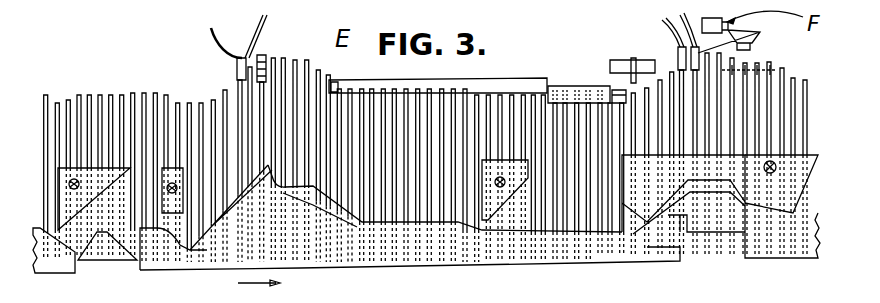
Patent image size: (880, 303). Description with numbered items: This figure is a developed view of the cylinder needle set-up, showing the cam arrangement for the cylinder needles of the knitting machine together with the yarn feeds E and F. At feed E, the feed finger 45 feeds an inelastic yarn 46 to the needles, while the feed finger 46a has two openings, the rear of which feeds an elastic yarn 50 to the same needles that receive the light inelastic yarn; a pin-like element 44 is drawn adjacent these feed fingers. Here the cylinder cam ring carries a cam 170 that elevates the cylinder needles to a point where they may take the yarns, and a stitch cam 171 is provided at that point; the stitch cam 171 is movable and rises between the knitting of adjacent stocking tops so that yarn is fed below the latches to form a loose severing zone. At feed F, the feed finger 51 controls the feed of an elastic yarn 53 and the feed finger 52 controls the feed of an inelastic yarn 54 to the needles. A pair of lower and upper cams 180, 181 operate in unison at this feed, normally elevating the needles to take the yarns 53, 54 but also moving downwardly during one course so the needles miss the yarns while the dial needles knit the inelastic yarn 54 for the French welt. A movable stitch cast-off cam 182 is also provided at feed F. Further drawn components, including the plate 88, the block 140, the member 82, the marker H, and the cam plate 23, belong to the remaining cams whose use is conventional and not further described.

The needle pin 44 is at (211, 32).
The elastic yarn 50 is at (255, 32).
The inelastic yarn 46 is at (337, 27).
The feed finger 46a is at (240, 60).
The feed finger 45 is at (274, 60).
The guide plate 88 is at (513, 70).
The guide block 140 is at (547, 82).
The stop member 82 is at (615, 88).
The marker H is at (620, 58).
The feed finger 51 is at (672, 57).
The elastic yarn 53 is at (663, 27).
The inelastic yarn 54 is at (685, 14).
The feed finger 52 is at (760, 33).
The cam 170 is at (117, 260).
The stitch cam 171 is at (192, 247).
The cam plate 23 is at (440, 203).
The movable stitch cast-off cam 182 is at (647, 220).
The upper cam 181 is at (728, 172).
The lower cam 180 is at (722, 222).